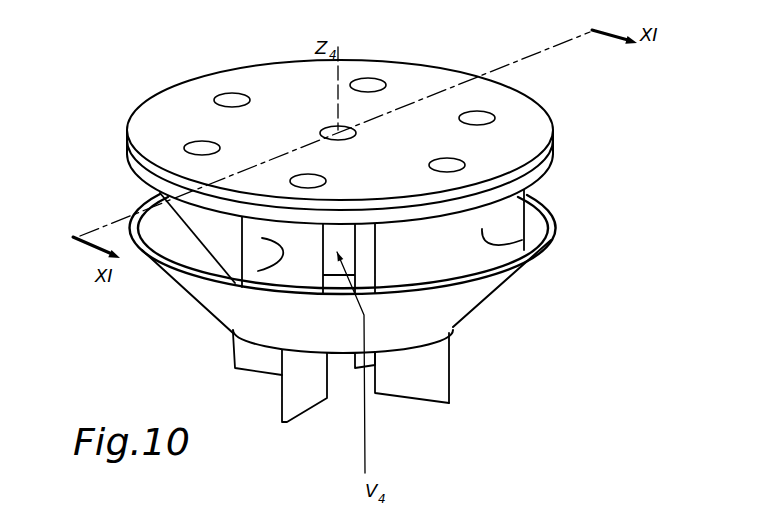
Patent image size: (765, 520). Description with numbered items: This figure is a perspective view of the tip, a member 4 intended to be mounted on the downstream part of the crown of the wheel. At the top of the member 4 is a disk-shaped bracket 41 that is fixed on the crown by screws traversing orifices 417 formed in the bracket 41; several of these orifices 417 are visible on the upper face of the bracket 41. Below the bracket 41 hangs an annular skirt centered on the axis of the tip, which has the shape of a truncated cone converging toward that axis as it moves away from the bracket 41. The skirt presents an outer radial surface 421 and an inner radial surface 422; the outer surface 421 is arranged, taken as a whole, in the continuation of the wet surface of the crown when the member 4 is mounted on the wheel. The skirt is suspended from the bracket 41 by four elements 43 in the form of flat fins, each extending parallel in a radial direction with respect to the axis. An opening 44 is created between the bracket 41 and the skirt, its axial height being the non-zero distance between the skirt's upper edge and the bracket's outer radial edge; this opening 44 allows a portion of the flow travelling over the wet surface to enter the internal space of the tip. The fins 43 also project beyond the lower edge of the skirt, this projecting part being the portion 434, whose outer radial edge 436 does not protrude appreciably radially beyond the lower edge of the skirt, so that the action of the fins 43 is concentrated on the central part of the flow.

The member 4 is at (163, 85).
The disk-shaped bracket 41 is at (385, 138).
The orifices 417 is at (447, 157).
The opening 44 is at (138, 193).
The elements in the form of flat fins 43 is at (513, 242).
The inner radial surface 422 is at (170, 238).
The outer radial surface 421 is at (437, 307).
The portion of the fins 434 is at (298, 393).
The outer radial edge 436 is at (452, 368).